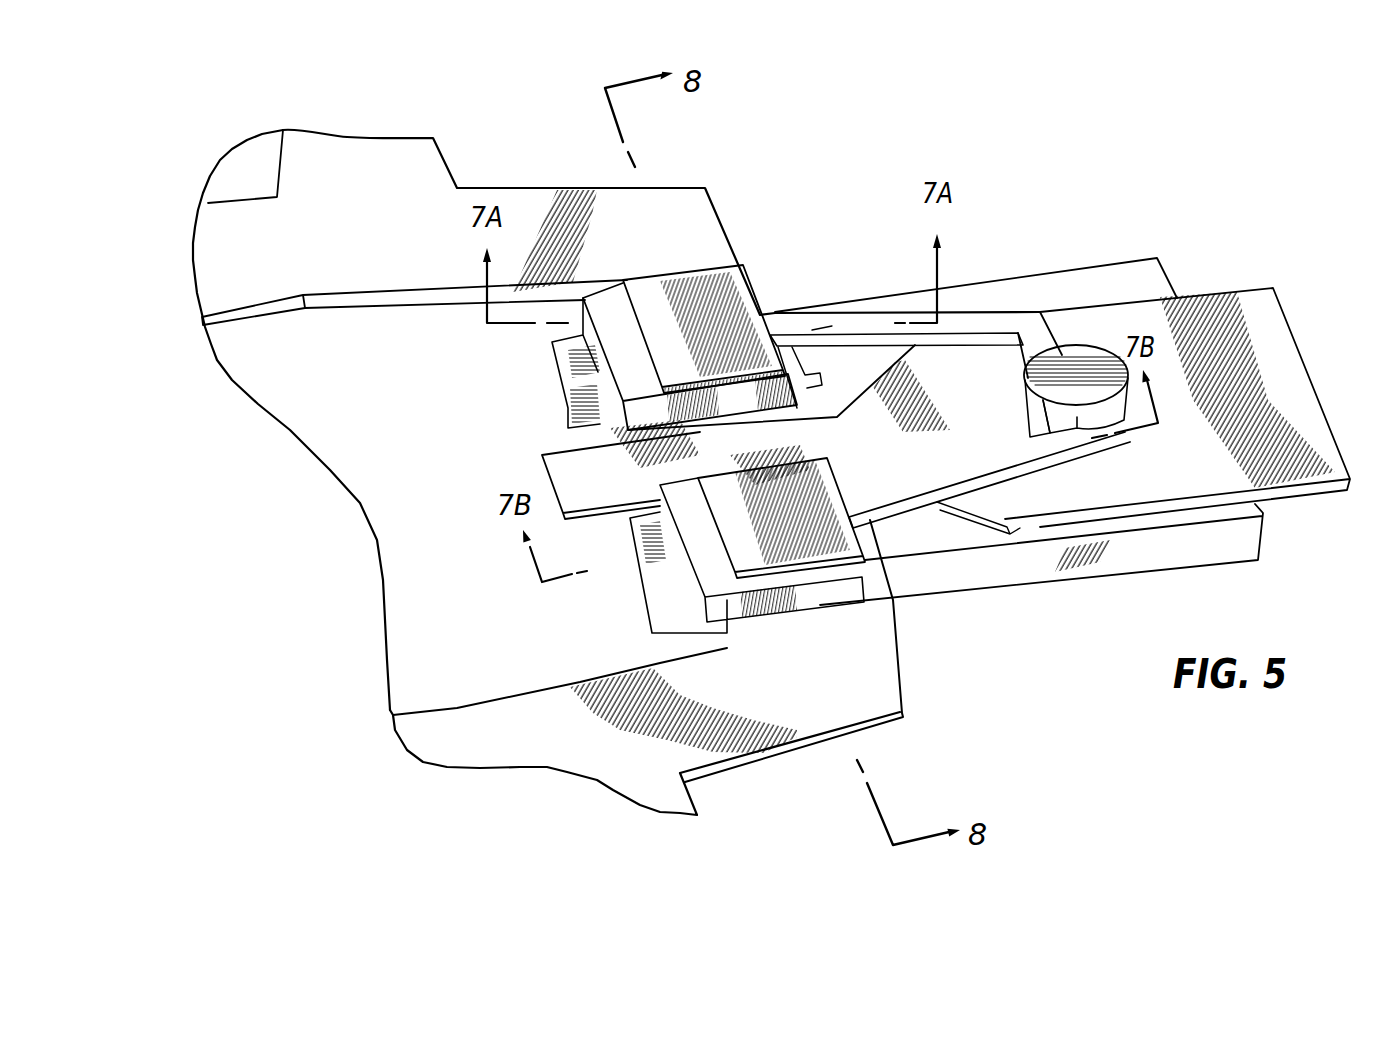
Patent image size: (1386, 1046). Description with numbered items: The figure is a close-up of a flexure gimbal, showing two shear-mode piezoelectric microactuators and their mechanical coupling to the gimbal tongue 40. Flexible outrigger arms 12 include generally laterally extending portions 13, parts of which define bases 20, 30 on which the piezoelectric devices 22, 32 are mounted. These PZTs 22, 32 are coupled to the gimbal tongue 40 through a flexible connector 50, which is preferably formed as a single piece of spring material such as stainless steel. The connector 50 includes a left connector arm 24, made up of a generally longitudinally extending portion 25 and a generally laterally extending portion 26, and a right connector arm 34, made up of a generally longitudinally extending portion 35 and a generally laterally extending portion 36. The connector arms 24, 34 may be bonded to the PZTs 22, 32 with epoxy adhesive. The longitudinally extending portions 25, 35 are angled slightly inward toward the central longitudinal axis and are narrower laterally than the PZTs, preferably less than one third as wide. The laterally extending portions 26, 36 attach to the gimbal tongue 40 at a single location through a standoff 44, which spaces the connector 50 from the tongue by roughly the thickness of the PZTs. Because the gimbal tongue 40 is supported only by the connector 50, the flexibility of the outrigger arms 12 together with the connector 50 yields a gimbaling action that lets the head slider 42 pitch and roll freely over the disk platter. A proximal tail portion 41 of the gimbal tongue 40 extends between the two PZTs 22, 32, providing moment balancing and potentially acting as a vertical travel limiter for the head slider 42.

The flexible outrigger arms 12 is at (602, 208).
The generally laterally extending portions 13 is at (820, 632).
The base 20 is at (808, 372).
The piezoelectric device 22 is at (578, 360).
The left connector arm 24 is at (735, 310).
The generally longitudinally extending portion 25 is at (822, 323).
The generally laterally extending portion 26 is at (1036, 340).
The base 30 is at (873, 533).
The piezoelectric device 32 is at (700, 597).
The right connector arm 34 is at (800, 553).
The generally longitudinally extending portion 35 is at (990, 472).
The generally laterally extending portion 36 is at (1067, 430).
The gimbal tongue 40 is at (1222, 323).
The proximal tail portion 41 is at (573, 460).
The head slider 42 is at (1153, 273).
The standoff 44 is at (1023, 418).
The flexible connector 50 is at (712, 280).